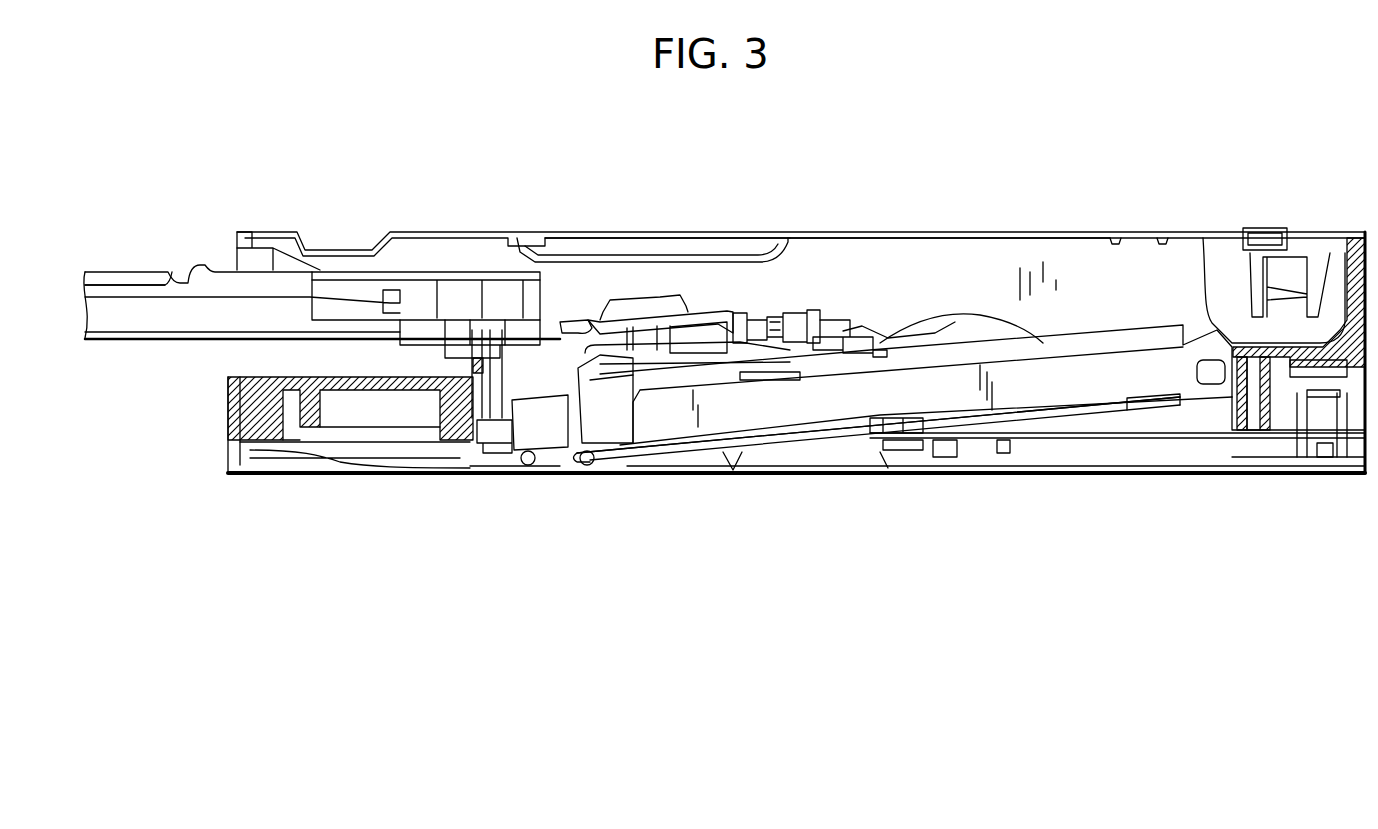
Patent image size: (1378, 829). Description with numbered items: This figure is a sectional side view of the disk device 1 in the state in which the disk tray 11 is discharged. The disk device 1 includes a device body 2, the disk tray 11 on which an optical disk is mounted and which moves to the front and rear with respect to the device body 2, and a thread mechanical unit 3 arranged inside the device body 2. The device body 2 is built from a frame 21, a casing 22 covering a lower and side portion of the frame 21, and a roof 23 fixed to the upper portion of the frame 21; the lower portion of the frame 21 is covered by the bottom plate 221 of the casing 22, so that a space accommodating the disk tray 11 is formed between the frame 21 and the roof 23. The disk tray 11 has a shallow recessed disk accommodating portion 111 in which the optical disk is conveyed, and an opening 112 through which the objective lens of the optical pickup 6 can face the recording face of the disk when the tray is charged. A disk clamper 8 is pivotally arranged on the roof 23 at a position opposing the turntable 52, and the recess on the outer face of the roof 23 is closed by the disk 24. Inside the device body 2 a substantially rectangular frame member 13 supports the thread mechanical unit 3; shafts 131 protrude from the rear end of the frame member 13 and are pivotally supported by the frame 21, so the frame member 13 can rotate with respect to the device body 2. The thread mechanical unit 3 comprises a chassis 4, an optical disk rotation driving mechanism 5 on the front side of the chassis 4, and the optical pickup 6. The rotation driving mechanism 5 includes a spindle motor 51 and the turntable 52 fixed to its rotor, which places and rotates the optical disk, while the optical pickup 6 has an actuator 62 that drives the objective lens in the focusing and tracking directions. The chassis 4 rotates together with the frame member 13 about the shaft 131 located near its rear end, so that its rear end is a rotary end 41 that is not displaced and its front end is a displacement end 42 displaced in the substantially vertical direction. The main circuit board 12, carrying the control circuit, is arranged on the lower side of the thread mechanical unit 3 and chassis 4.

The disk device 1 is at (1038, 158).
The device body 2 is at (435, 228).
The thread mechanical unit 3 is at (905, 312).
The chassis 4 is at (815, 443).
The optical disk rotation driving mechanism 5 is at (572, 318).
The optical pickup 6 is at (812, 308).
The disk clamper 8 is at (622, 252).
The disk tray 11 is at (143, 342).
The main circuit board 12 is at (1090, 438).
The frame member 13 is at (945, 385).
The frame 21 is at (470, 442).
The casing 22 is at (670, 472).
The roof 23 is at (866, 236).
The disk 24 is at (664, 236).
The rotary end 41 is at (1152, 403).
The displacement end 42 is at (570, 455).
The spindle motor 51 is at (613, 360).
The turntable 52 is at (588, 332).
The actuator 62 is at (740, 318).
The disk accommodating portion 111 is at (95, 272).
The opening 112 is at (205, 283).
The shaft 131 is at (1208, 386).
The bottom plate 221 is at (796, 519).